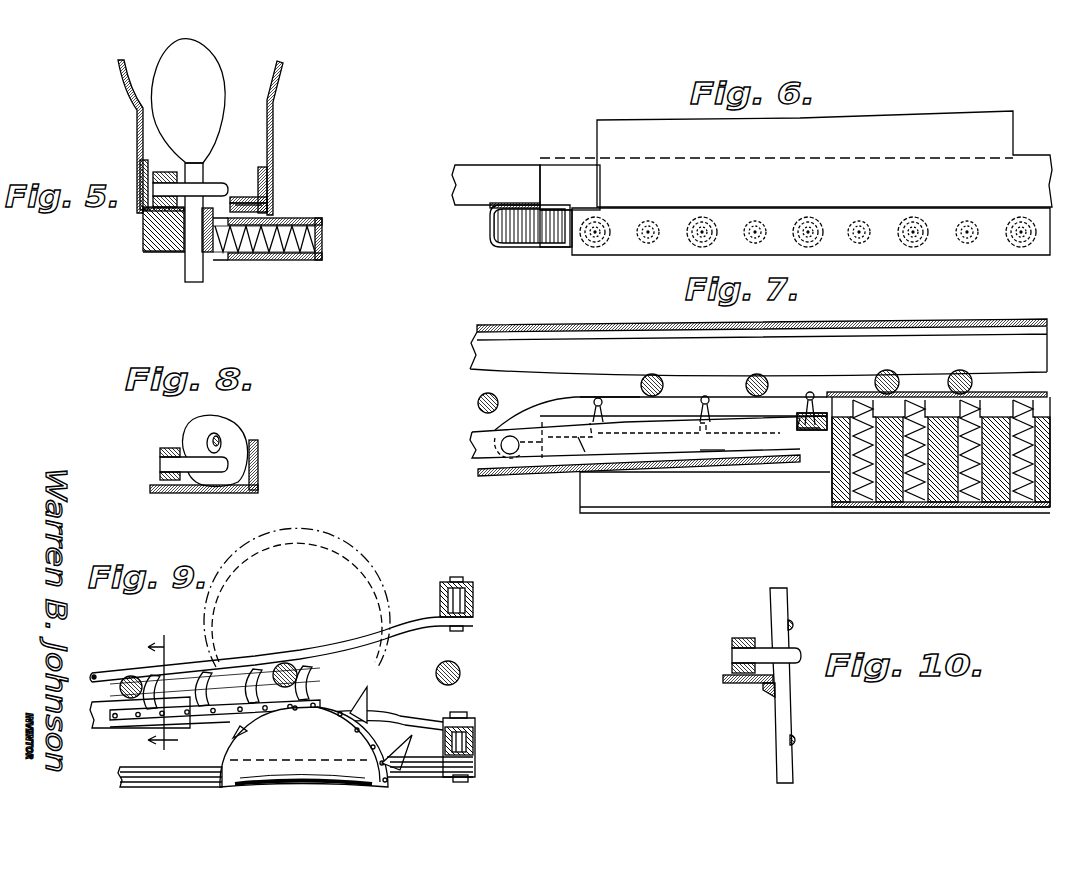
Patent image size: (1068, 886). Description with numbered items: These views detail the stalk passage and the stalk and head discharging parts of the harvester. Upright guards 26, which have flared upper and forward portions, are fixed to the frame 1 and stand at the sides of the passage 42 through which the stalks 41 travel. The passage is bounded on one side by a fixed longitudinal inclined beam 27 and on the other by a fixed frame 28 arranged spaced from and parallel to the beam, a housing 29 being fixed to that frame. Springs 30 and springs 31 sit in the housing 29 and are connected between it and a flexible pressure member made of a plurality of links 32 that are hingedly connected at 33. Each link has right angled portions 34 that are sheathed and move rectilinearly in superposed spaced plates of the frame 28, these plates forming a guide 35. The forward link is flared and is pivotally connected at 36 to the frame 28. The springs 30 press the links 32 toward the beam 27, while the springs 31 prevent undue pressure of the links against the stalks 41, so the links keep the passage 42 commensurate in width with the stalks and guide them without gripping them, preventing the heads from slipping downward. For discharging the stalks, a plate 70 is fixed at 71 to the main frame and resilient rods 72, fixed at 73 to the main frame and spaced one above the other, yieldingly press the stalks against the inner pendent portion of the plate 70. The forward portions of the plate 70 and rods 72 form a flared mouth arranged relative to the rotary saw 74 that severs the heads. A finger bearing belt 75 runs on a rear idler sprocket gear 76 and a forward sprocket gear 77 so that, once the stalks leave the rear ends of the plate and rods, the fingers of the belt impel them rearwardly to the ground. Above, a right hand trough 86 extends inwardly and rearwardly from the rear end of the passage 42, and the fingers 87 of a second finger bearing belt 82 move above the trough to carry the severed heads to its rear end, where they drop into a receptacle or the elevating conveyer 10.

In FIG. 9, the frame 1 is at (475, 590).
In FIG. 9, the elevating conveyer 10 is at (164, 688).
In FIG. 5, the upright guards 26 is at (118, 96).
In FIG. 6, the upright guards 26 is at (951, 120).
In FIG. 7, the upright guards 26 is at (993, 315).
In FIG. 5, the longitudinal inclined beam 27 is at (143, 215).
In FIG. 7, the longitudinal inclined beam 27 is at (852, 347).
In FIG. 5, the fixed frame 28 is at (257, 188).
In FIG. 6, the fixed frame 28 is at (578, 185).
In FIG. 7, the fixed frame 28 is at (770, 452).
In FIG. 5, the housing 29 is at (288, 262).
In FIG. 6, the housing 29 is at (1003, 248).
In FIG. 7, the housing 29 is at (727, 485).
In FIG. 5, the springs 30 is at (322, 240).
In FIG. 6, the springs 30 is at (686, 255).
In FIG. 7, the springs 30 is at (917, 503).
In FIG. 6, the springs 31 is at (746, 218).
In FIG. 7, the springs 31 is at (838, 503).
In FIG. 5, the links 32 is at (210, 255).
In FIG. 6, the links 32 is at (560, 236).
In FIG. 7, the links 32 is at (572, 396).
In FIG. 7, the hinged connection 33 is at (808, 392).
In FIG. 5, the right angled portions 34 is at (268, 199).
In FIG. 6, the right angled portions 34 is at (529, 203).
In FIG. 7, the right angled portions 34 is at (605, 462).
In FIG. 5, the guide 35 is at (268, 206).
In FIG. 7, the guide 35 is at (713, 453).
In FIG. 6, the pivotal connection 36 is at (492, 237).
In FIG. 7, the pivotal connection 36 is at (510, 453).
In FIG. 5, the stalks 41 is at (190, 262).
In FIG. 7, the stalks 41 is at (652, 375).
In FIG. 9, the stalks 41 is at (130, 676).
In FIG. 10, the stalks 41 is at (781, 730).
In FIG. 5, the passage 42 is at (153, 252).
In FIG. 7, the passage 42 is at (612, 390).
In FIG. 9, the plate 70 is at (101, 723).
In FIG. 10, the plate 70 is at (733, 686).
In FIG. 9, the fixing point of plate 71 is at (462, 714).
In FIG. 9, the rods 72 is at (380, 607).
In FIG. 10, the rods 72 is at (798, 624).
In FIG. 9, the fixing point of rods 73 is at (475, 622).
In FIG. 9, the rotary saw 74 is at (343, 555).
In FIG. 10, the finger bearing belt 75 is at (745, 638).
In FIG. 9, the rear idler sprocket gear 76 is at (181, 717).
In FIG. 9, the forward sprocket gear 77 is at (307, 745).
In FIG. 8, the finger bearing belt 82 is at (178, 449).
In FIG. 8, the right hand trough 86 is at (259, 453).
In FIG. 8, the fingers 87 is at (200, 473).